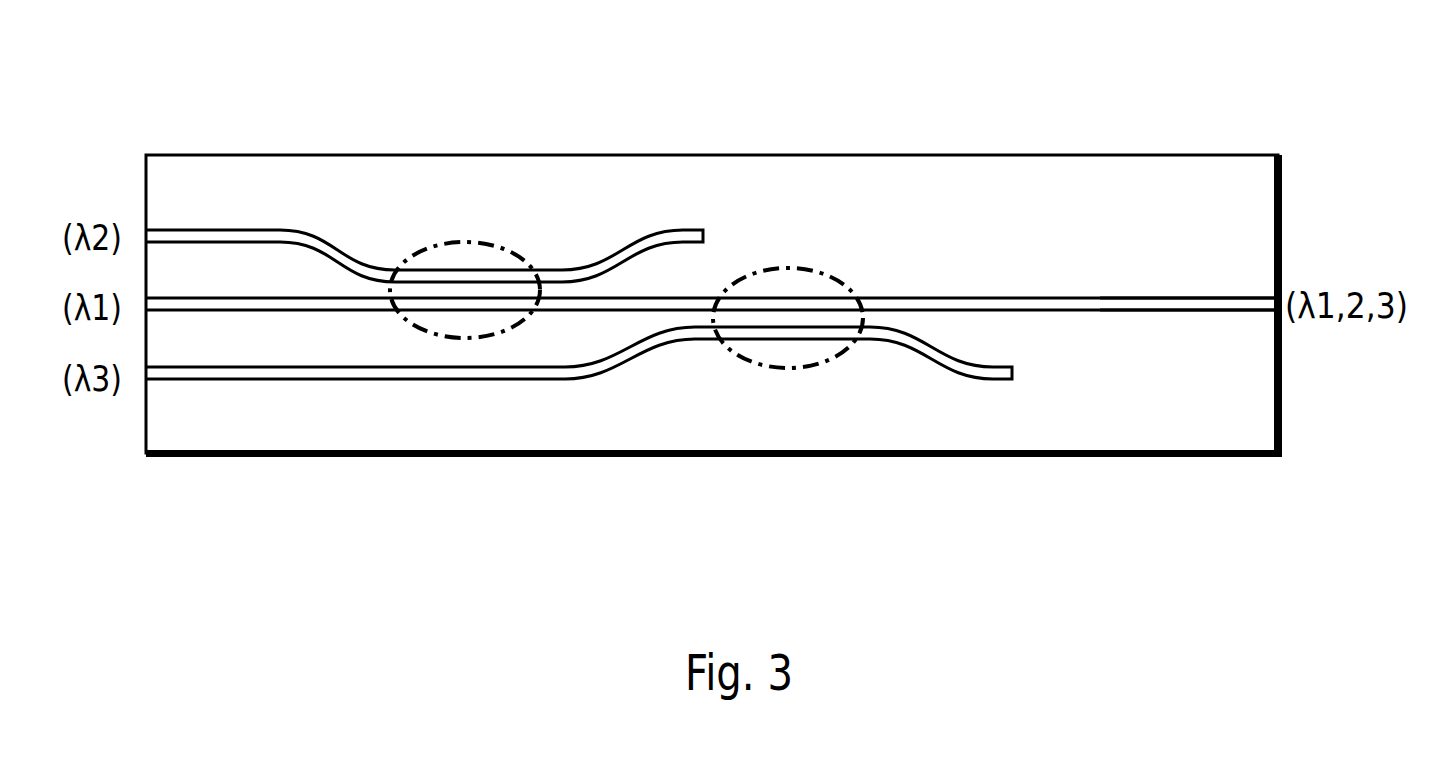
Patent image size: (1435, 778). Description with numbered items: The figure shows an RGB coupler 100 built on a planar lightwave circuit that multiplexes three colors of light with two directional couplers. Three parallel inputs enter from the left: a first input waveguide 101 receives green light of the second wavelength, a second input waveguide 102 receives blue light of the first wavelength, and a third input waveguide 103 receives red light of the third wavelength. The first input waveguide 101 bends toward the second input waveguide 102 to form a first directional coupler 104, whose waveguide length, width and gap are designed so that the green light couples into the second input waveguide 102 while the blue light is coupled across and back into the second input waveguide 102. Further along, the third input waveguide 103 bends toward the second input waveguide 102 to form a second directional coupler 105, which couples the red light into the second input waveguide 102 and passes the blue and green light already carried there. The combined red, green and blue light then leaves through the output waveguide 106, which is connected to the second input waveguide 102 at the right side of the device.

The RGB coupler 100 is at (810, 150).
The first input waveguide 101 is at (225, 233).
The second input waveguide 102 is at (248, 307).
The third input waveguide 103 is at (245, 373).
The first directional coupler 104 is at (468, 240).
The second directional coupler 105 is at (785, 368).
The output waveguide 106 is at (1150, 300).